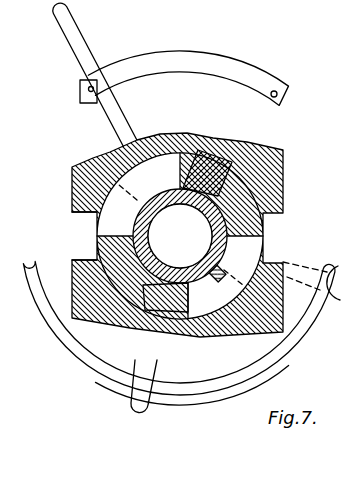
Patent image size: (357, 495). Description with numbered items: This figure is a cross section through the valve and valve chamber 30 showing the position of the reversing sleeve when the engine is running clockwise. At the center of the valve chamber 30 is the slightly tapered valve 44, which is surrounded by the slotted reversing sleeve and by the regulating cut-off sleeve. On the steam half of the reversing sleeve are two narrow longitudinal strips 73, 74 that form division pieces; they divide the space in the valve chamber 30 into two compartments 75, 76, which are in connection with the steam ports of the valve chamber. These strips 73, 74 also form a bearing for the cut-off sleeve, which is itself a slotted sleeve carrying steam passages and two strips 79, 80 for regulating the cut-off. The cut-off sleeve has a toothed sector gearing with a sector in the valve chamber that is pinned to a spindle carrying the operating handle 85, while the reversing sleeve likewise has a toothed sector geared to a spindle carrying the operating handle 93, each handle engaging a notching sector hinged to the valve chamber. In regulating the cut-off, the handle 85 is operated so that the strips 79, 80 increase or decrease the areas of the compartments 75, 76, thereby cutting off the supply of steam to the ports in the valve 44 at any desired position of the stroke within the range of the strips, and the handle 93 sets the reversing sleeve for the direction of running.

The valve chamber 30 is at (283, 195).
The valve 44 is at (192, 236).
The longitudinal strip 73 is at (98, 247).
The longitudinal strip 74 is at (235, 175).
The compartment 75 is at (139, 182).
The compartment 76 is at (221, 284).
The strip 79 is at (208, 144).
The strip 80 is at (172, 322).
The operating handle 85 is at (133, 399).
The operating handle 93 is at (78, 38).